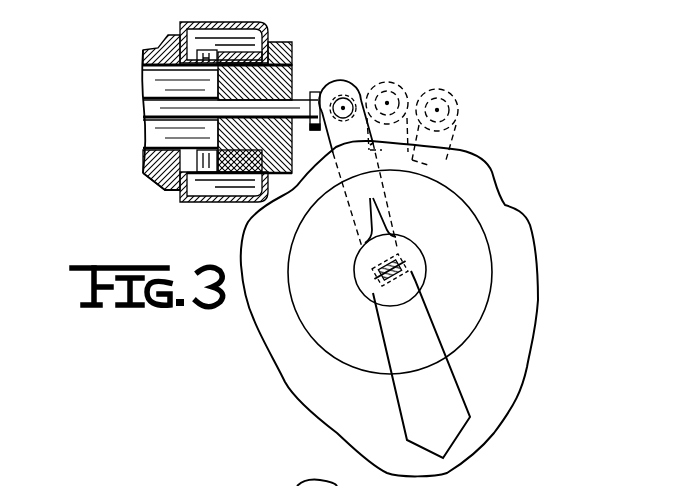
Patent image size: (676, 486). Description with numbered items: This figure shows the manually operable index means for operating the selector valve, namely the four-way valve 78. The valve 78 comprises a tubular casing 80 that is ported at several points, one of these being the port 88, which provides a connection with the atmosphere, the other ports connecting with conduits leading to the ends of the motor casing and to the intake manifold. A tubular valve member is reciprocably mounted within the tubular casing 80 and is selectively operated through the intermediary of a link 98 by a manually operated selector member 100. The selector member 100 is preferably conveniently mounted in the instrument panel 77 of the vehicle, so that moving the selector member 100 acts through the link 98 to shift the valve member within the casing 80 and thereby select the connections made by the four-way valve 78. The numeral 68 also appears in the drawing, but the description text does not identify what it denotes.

The hub 68 is at (253, 477).
The instrument panel 77 is at (510, 265).
The four-way valve 78 is at (133, 68).
The tubular casing 80 is at (150, 176).
The port 88 is at (213, 56).
The link 98 is at (288, 110).
The manually operated selector member 100 is at (435, 380).